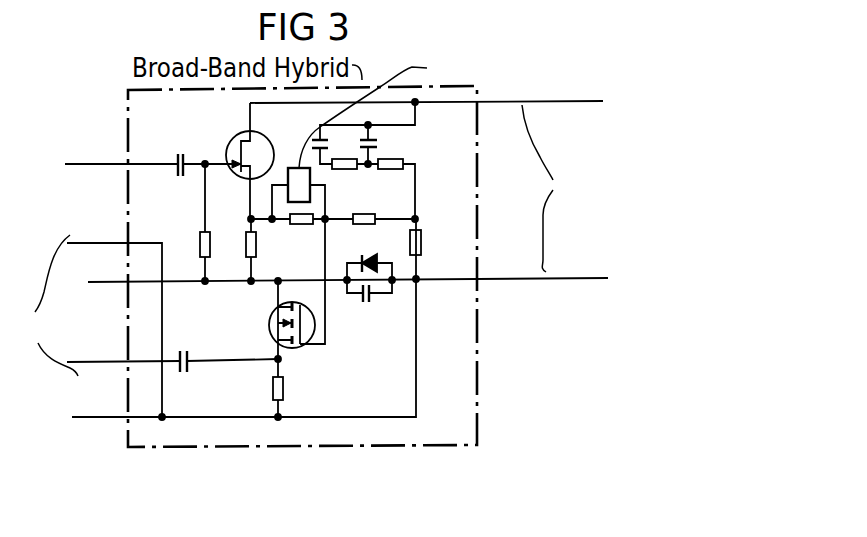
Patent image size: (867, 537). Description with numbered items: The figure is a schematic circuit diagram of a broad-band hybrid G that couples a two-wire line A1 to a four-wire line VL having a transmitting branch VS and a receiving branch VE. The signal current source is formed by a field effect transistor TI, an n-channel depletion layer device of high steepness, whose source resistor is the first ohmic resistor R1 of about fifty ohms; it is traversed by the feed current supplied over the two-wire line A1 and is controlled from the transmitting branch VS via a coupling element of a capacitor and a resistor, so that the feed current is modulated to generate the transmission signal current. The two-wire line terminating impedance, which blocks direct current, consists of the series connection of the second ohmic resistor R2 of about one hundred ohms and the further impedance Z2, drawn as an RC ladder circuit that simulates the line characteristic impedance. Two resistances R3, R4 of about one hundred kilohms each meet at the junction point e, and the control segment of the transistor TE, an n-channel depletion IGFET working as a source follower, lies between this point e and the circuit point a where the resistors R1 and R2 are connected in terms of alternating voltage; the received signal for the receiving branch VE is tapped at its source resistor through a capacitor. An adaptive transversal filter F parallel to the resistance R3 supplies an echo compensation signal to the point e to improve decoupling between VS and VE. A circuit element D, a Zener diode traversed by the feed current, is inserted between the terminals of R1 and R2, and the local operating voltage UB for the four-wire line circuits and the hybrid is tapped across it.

The field effect transistor TI is at (257, 161).
The transistor TE is at (276, 320).
The adaptive transversal filter F is at (298, 193).
The further impedance Z2 is at (456, 110).
The first ohmic resistor R1 is at (262, 250).
The second ohmic resistor R2 is at (427, 242).
The resistance R3 is at (301, 238).
The resistance R4 is at (365, 238).
The circuit element D is at (367, 267).
The junction point e is at (322, 280).
The circuit point a is at (436, 292).
The broad-band hybrid G is at (454, 422).
The transmitting branch VS is at (79, 219).
The local operating voltage UB is at (84, 293).
The four-wire line VL is at (43, 329).
The receiving branch VE is at (89, 394).
The two-wire line A1 is at (550, 188).